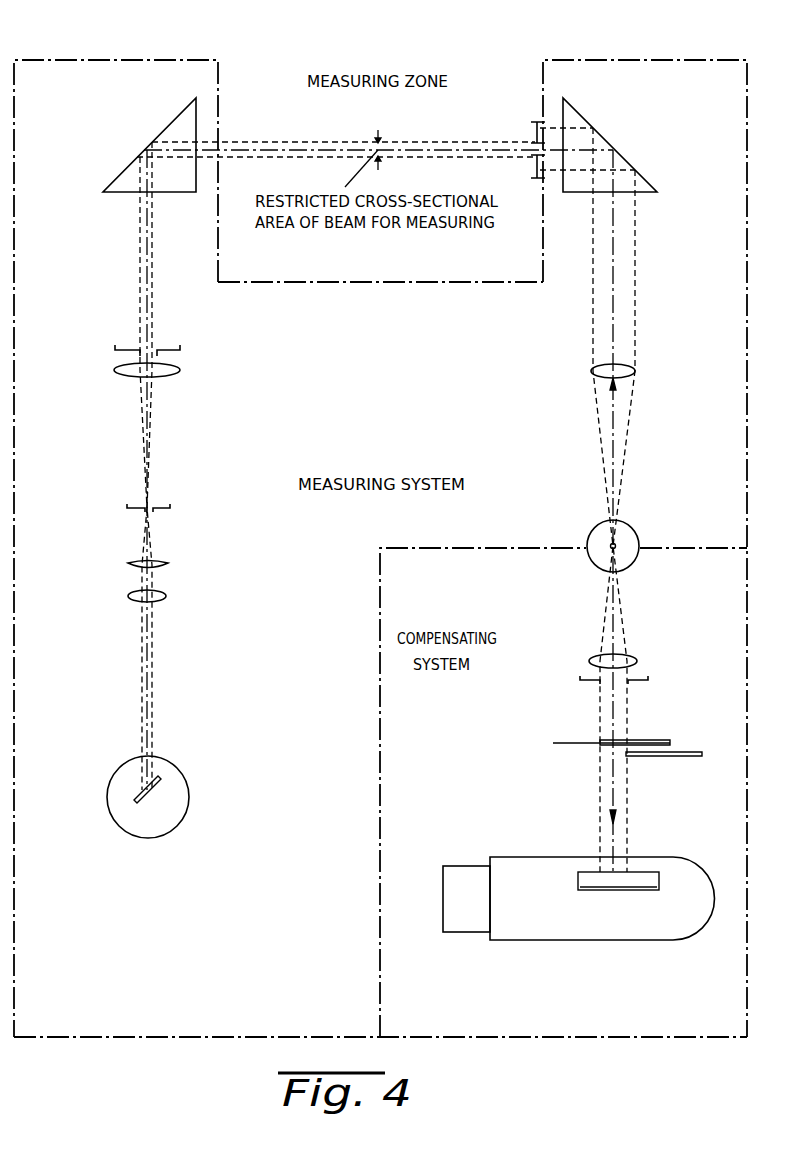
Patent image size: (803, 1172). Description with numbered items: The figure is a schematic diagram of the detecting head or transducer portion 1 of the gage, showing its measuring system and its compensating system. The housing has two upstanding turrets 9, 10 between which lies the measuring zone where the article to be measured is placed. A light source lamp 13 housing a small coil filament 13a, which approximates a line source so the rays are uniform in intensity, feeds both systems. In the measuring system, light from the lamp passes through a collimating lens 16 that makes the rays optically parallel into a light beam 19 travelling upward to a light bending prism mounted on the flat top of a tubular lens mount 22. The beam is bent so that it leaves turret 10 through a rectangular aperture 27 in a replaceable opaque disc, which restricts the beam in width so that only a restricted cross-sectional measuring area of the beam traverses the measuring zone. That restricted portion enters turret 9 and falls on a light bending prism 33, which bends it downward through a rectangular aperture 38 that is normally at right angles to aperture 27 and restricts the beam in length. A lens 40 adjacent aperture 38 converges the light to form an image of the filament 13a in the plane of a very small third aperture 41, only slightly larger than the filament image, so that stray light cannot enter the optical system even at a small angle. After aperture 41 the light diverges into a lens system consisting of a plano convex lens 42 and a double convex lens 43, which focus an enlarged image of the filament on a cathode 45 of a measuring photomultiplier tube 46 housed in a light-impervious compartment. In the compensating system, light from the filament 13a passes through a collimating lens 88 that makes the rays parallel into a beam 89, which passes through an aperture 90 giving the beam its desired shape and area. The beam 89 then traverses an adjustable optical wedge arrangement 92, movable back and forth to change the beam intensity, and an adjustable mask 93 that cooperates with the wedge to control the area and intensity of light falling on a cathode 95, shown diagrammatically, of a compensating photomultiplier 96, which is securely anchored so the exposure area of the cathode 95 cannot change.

The detecting head 1 is at (369, 929).
The turret 9 is at (123, 60).
The turret 10 is at (611, 60).
The light source lamp 13 is at (590, 559).
The coil filament 13a is at (616, 548).
The collimating lens 16 is at (625, 366).
The light beam 19 is at (638, 254).
The tubular lens mount 22 is at (585, 122).
The rectangular aperture 27 is at (533, 155).
The light bending prism 33 is at (165, 128).
The rectangular aperture 38 is at (160, 345).
The lens 40 is at (170, 372).
The third aperture 41 is at (160, 506).
The plano convex lens 42 is at (155, 562).
The double convex lens 43 is at (155, 600).
The cathode 45 is at (146, 797).
The measuring photomultiplier tube 46 is at (178, 772).
The collimating lens 88 is at (595, 657).
The beam 89 is at (600, 698).
The aperture 90 is at (630, 676).
The adjustable optical wedge arrangement 92 is at (655, 740).
The adjustable mask 93 is at (680, 757).
The cathode 95 is at (628, 883).
The compensating photomultiplier 96 is at (680, 860).